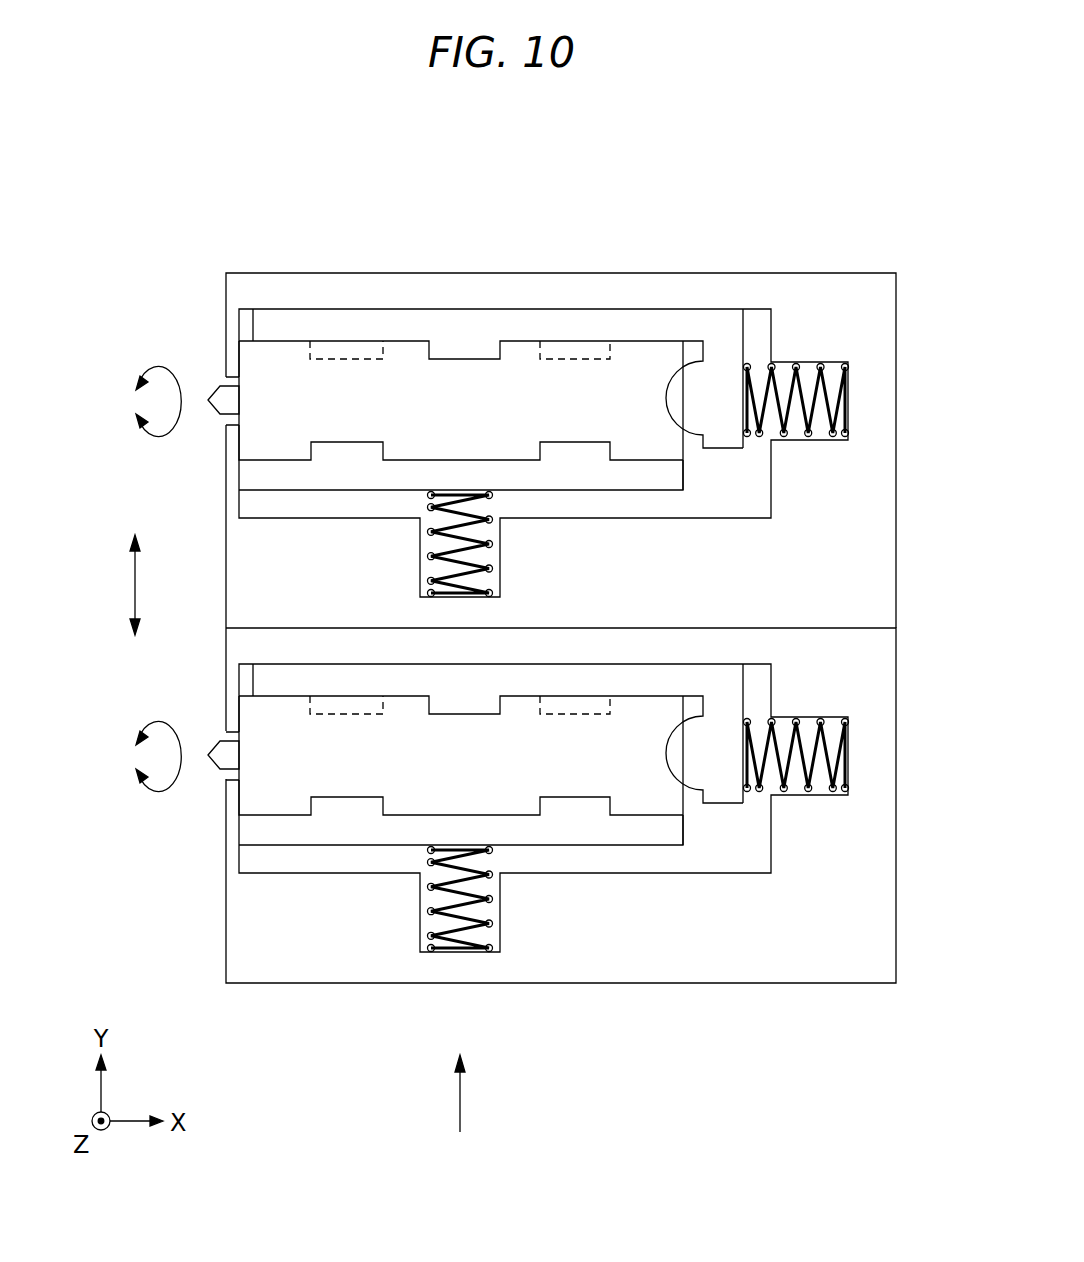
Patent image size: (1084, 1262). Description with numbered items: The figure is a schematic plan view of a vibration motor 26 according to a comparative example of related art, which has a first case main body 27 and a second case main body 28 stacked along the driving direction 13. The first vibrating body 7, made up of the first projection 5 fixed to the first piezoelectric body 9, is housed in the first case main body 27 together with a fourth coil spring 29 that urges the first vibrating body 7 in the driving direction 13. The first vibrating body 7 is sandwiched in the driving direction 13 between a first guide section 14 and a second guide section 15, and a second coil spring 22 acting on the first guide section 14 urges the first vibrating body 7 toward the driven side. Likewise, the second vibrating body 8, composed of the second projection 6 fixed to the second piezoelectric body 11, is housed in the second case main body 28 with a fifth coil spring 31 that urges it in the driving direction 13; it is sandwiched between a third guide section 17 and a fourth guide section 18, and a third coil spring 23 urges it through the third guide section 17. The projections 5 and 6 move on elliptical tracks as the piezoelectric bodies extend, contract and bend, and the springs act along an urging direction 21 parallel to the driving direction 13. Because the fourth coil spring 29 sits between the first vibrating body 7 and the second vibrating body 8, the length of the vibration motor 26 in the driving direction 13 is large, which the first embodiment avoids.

The first projection 5 is at (222, 397).
The second projection 6 is at (183, 786).
The first vibrating body 7 is at (126, 292).
The second vibrating body 8 is at (414, 782).
The first piezoelectric body 9 is at (257, 358).
The second piezoelectric body 11 is at (435, 782).
The driving direction 13 is at (135, 580).
The first guide section 14 is at (646, 325).
The second guide section 15 is at (647, 468).
The third guide section 17 is at (537, 760).
The fourth guide section 18 is at (461, 873).
The urging direction 21 is at (460, 1095).
The second coil spring 22 is at (795, 418).
The third coil spring 23 is at (854, 755).
The vibration motor 26 is at (855, 158).
The first case main body 27 is at (825, 292).
The second case main body 28 is at (823, 967).
The fourth coil spring 29 is at (465, 550).
The fifth coil spring 31 is at (502, 899).